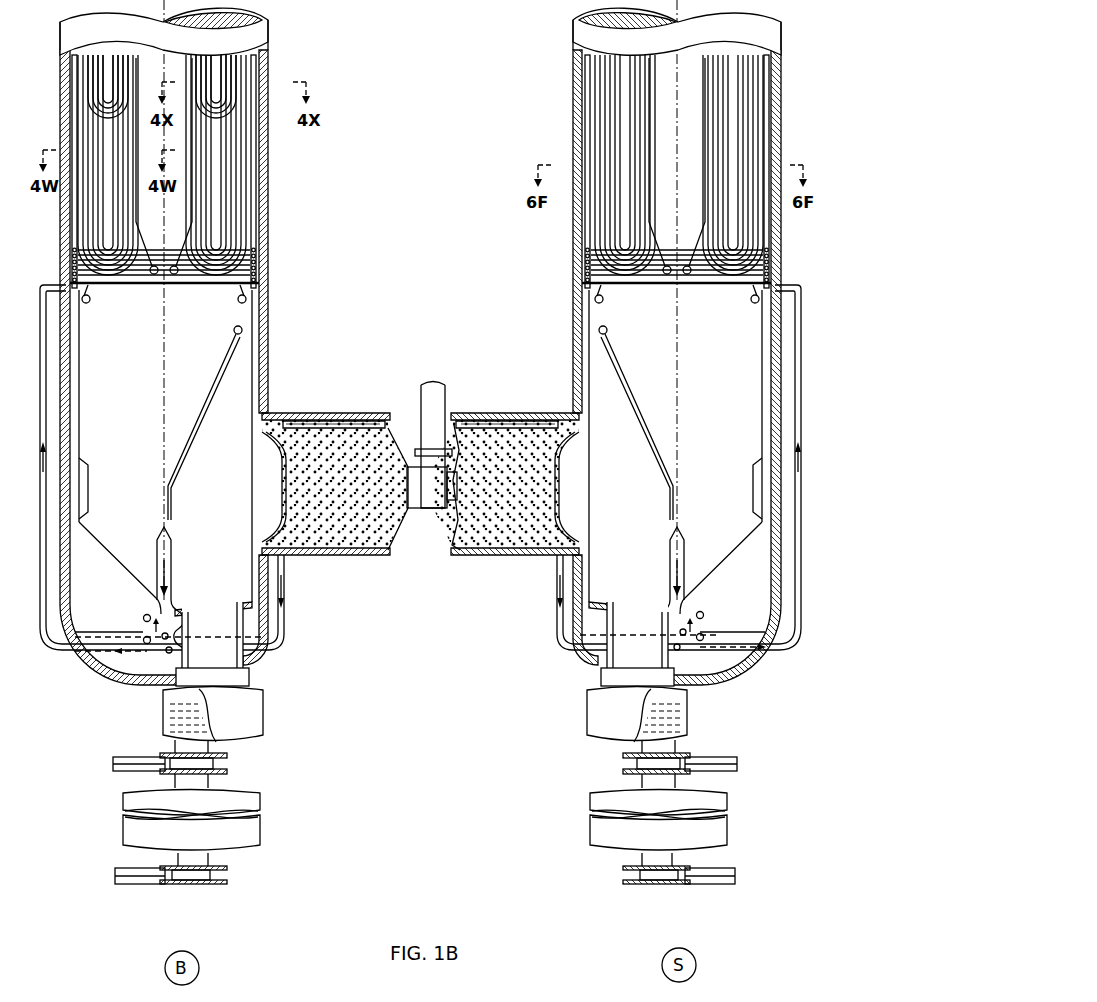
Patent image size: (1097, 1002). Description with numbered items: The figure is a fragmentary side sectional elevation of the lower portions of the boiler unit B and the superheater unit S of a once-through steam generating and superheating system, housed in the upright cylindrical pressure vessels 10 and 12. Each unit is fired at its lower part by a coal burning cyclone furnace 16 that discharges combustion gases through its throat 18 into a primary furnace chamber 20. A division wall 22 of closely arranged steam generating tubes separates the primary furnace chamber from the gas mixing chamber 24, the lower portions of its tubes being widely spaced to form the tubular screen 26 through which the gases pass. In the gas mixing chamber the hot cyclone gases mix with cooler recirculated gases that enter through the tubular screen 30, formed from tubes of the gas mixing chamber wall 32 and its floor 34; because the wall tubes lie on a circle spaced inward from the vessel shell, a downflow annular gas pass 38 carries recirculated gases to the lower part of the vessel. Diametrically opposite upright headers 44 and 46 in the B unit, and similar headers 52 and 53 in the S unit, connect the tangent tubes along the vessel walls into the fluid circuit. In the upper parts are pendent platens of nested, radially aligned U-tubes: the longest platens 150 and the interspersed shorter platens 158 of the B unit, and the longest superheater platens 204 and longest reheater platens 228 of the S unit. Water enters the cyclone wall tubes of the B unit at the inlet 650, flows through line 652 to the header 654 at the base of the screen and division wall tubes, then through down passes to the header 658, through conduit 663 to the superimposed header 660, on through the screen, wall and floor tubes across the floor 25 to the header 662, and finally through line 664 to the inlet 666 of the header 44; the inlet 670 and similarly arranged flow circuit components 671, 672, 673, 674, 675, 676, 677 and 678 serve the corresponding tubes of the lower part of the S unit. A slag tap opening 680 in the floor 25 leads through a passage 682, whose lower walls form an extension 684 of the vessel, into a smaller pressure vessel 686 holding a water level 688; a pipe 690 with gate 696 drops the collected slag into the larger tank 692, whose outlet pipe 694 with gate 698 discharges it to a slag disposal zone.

The pressure vessel 10 is at (270, 261).
The pressure vessel 12 is at (572, 295).
The cyclone furnace 16 is at (326, 557).
The throat 18 is at (278, 500).
The primary furnace chamber 20 is at (218, 486).
The division wall 22 is at (214, 392).
The gas mixing chamber 24 is at (149, 431).
The floor of primary furnace chamber 25 is at (176, 620).
The tubular screen 26 is at (172, 540).
The tubular screen 30 is at (88, 470).
The gas mixing chamber wall 32 is at (80, 402).
The floor of gas mixing chamber 34 is at (88, 538).
The downflow annular gas pass 38 is at (70, 372).
The upright header 44 is at (72, 248).
The upright header 46 is at (260, 232).
The header 52 is at (585, 208).
The header 53 is at (773, 225).
The longest platens 150 is at (120, 208).
The next shorter platens 158 is at (118, 78).
The longest U-bend tubular platens 204 is at (748, 208).
The longest reheater platens 228 is at (640, 208).
The inlet 650 is at (372, 560).
The line 652 is at (286, 580).
The header 654 is at (162, 639).
The header 658 is at (143, 640).
The superimposed header 660 is at (143, 615).
The header 662 is at (170, 651).
The conduit 663 is at (150, 620).
The line 664 is at (46, 326).
The inlet 666 is at (66, 289).
The inlet 670 is at (450, 560).
The flow circuit component 671 is at (561, 615).
The flow circuit component 672 is at (687, 641).
The flow circuit component 673 is at (705, 638).
The flow circuit component 674 is at (695, 627).
The flow circuit component 675 is at (703, 614).
The flow circuit component 676 is at (678, 648).
The flow circuit component 677 is at (795, 652).
The hanger hook 678 is at (767, 294).
The slag tap opening 680 is at (224, 599).
The passage 682 is at (232, 656).
The extension 684 is at (249, 673).
The smaller pressure vessel 686 is at (232, 721).
The water level 688 is at (165, 698).
The pipe 690 is at (205, 776).
The larger pressure vessel 692 is at (210, 843).
The outlet pipe 694 is at (208, 859).
The gate 696 is at (130, 763).
The gate 698 is at (140, 879).